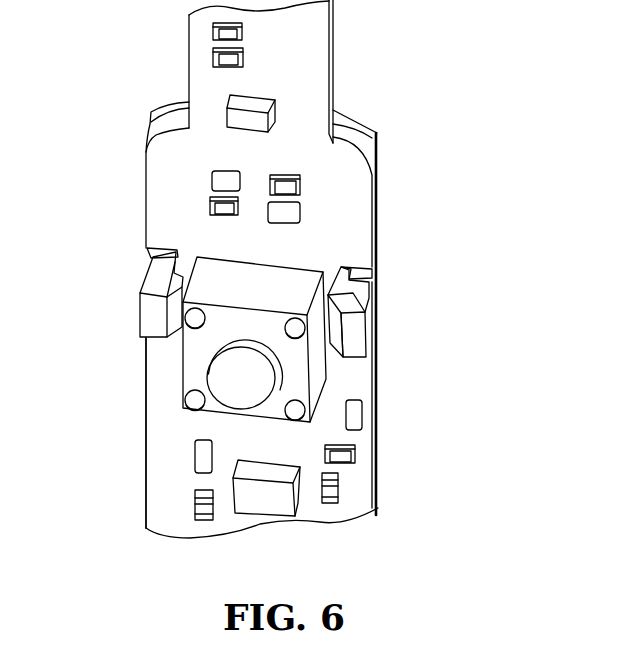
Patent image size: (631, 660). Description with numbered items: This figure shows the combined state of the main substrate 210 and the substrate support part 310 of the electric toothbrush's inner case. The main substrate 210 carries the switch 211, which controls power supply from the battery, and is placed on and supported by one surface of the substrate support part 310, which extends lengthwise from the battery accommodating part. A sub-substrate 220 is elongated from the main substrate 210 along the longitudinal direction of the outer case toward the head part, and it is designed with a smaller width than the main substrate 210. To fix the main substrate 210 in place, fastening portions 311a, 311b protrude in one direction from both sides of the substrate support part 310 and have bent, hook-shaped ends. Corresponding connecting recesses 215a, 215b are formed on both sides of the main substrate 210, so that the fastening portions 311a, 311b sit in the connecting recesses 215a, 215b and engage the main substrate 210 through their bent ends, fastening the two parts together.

The main substrate 210 is at (167, 450).
The switch 211 is at (222, 373).
The connecting recess 215a is at (350, 272).
The connecting recess 215b is at (150, 258).
The sub-substrate 220 is at (197, 58).
The substrate support part 310 is at (378, 197).
The fastening portion 311a is at (355, 335).
The fastening portion 311b is at (150, 308).